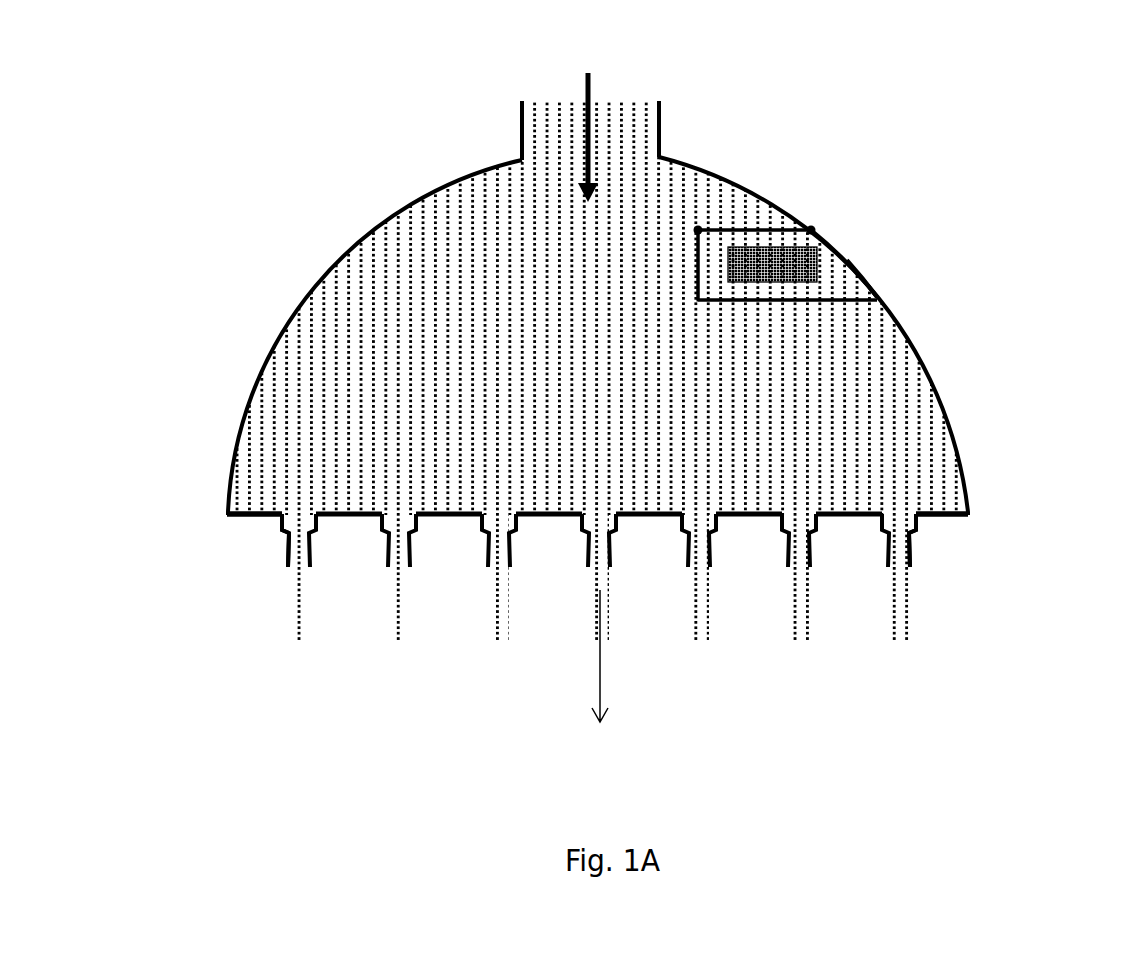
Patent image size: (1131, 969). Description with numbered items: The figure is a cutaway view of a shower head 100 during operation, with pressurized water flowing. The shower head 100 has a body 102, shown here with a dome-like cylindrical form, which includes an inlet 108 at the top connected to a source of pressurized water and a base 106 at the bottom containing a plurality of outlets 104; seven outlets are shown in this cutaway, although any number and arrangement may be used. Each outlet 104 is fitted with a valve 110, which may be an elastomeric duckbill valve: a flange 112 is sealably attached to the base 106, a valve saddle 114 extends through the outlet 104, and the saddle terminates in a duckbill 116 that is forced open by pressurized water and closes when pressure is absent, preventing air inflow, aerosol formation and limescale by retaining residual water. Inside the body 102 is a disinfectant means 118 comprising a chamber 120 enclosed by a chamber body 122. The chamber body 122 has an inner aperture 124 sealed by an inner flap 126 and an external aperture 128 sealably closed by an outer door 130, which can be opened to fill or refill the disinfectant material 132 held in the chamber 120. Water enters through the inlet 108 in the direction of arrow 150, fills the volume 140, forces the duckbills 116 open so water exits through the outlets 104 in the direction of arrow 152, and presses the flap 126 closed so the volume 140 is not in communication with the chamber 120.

The shower head 100 is at (268, 131).
The body 102 is at (283, 333).
The outlets 104 is at (898, 514).
The base 106 is at (233, 520).
The inlet 108 is at (640, 123).
The valve 110 is at (910, 548).
The flange 112 is at (273, 512).
The valve saddle 114 is at (280, 525).
The duckbill 116 is at (287, 547).
The disinfectant means 118 is at (759, 323).
The chamber 120 is at (752, 238).
The chamber body 122 is at (835, 305).
The inner aperture 124 is at (707, 258).
The inner flap 126 is at (697, 234).
The external aperture 128 is at (850, 265).
The outer door 130 is at (873, 283).
The disinfectant material 132 is at (810, 236).
The volume 140 is at (408, 305).
The arrow 150 is at (588, 73).
The arrow 152 is at (600, 718).